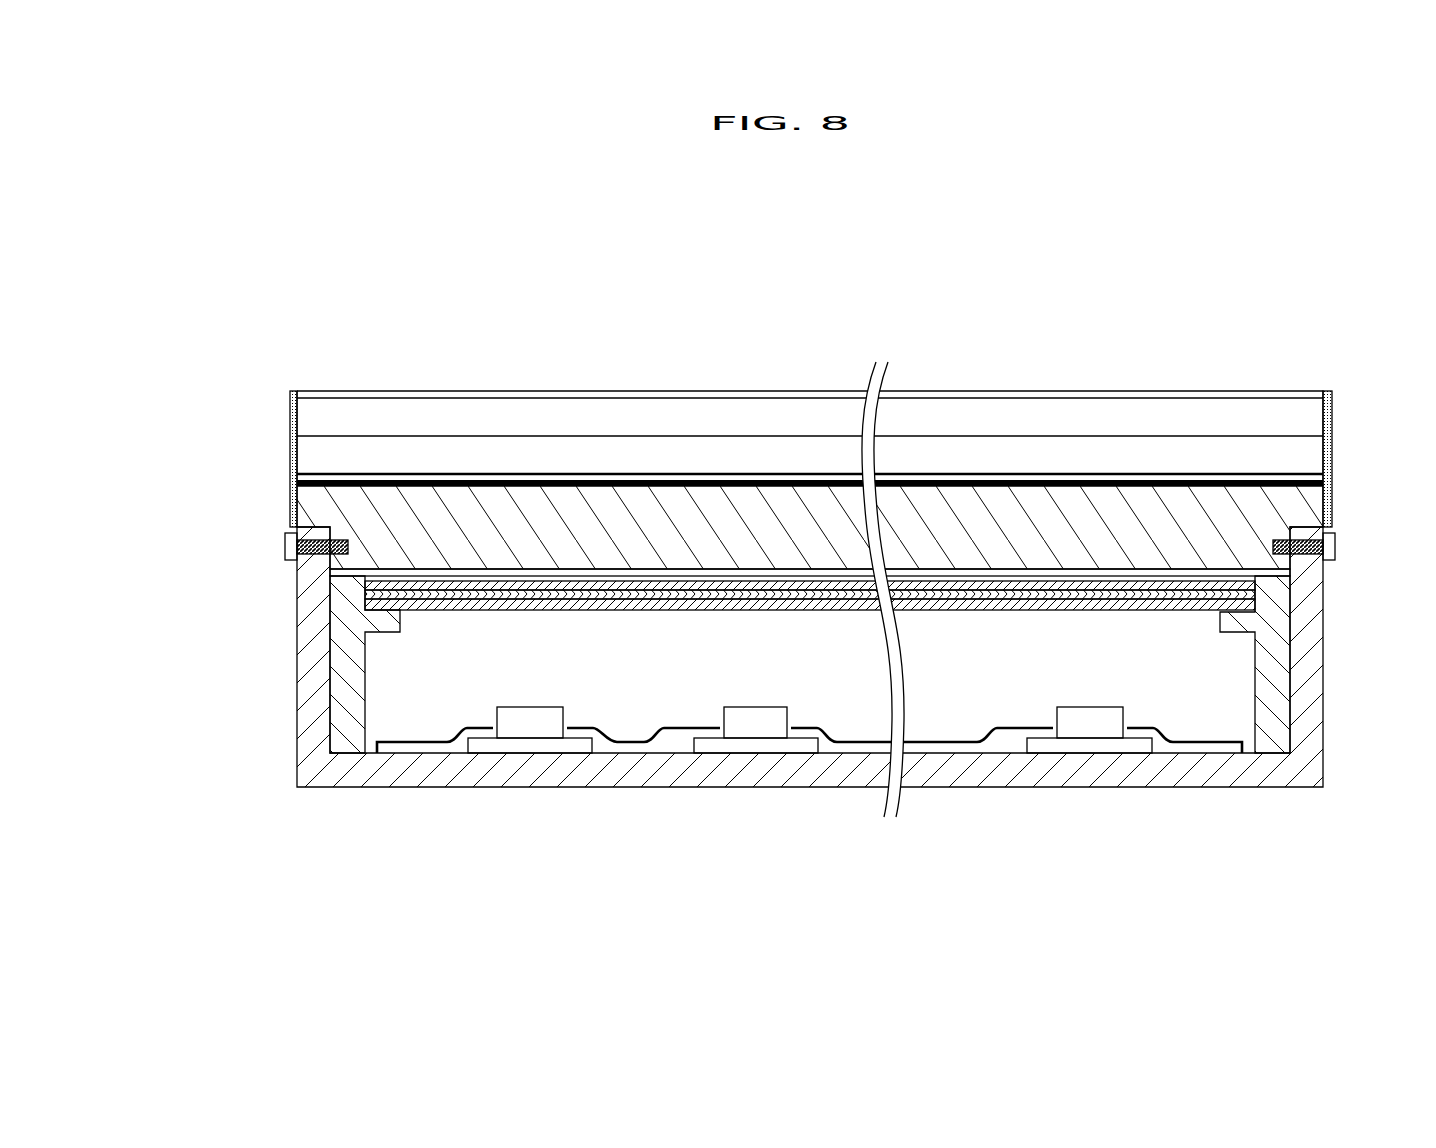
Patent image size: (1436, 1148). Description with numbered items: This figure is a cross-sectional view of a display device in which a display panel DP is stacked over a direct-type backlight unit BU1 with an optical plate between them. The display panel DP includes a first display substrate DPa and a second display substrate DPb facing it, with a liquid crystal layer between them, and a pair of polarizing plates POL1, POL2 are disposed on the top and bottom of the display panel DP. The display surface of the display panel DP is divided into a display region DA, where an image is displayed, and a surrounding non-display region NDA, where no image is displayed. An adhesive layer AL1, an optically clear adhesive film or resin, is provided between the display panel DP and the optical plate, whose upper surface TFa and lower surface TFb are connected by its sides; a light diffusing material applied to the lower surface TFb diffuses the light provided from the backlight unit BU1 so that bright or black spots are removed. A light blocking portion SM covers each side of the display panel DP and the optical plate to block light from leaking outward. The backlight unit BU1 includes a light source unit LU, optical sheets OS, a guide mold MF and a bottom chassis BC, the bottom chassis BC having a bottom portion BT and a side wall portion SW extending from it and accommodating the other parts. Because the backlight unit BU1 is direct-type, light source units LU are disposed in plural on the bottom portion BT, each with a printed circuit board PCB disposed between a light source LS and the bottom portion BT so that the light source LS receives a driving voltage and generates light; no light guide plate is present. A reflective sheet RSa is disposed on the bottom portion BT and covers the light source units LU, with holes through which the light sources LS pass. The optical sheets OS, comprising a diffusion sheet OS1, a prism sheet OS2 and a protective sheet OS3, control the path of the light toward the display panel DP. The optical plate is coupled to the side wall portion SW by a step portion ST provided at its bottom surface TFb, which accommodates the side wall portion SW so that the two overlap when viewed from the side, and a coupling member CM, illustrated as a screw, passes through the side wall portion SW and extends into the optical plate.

The non-display region NDA is at (1324, 387).
The display region DA is at (1291, 306).
The display panel DP is at (745, 438).
The second display substrate DPb is at (303, 418).
The first display substrate DPa is at (303, 452).
The polarizing plate POL1 is at (362, 397).
The polarizing plate POL2 is at (300, 475).
The adhesive layer AL1 is at (300, 487).
The upper surface of the optical plate TFa is at (603, 480).
The lower surface of the optical plate TFb is at (563, 572).
The light blocking portion SM is at (298, 510).
The coupling member CM is at (288, 547).
The step portion ST is at (314, 569).
The guide mold MF is at (350, 733).
The optical sheets OS is at (810, 734).
The diffusion sheet OS1 is at (982, 607).
The prism sheet OS2 is at (1027, 607).
The protective sheet OS3 is at (1070, 607).
The reflective sheet RSa is at (1140, 733).
The light source unit LU is at (810, 797).
The printed circuit board PCB is at (510, 735).
The light source LS is at (543, 726).
The bottom chassis BC is at (827, 707).
The bottom portion BT is at (1203, 777).
The side wall portion SW is at (1323, 687).
The backlight unit BU1 is at (811, 728).